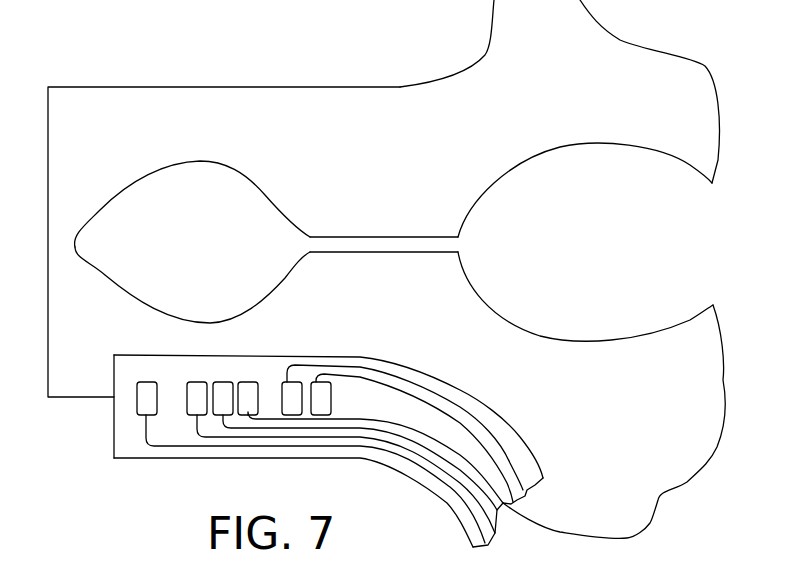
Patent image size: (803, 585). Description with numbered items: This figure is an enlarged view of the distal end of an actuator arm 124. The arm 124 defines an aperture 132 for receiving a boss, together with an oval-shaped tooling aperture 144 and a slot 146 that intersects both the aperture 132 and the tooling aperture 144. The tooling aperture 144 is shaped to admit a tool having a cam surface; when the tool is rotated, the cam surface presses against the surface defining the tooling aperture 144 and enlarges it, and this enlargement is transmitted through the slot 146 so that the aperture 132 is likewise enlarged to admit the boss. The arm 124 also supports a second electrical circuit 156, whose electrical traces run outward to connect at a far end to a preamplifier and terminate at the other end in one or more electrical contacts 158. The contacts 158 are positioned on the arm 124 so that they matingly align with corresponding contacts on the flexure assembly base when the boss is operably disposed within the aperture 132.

The arm 124 is at (130, 87).
The aperture 132 is at (125, 197).
The tooling aperture 144 is at (582, 143).
The slot 146 is at (319, 237).
The second electrical circuit 156 is at (152, 459).
The electrical contacts 158 is at (285, 379).